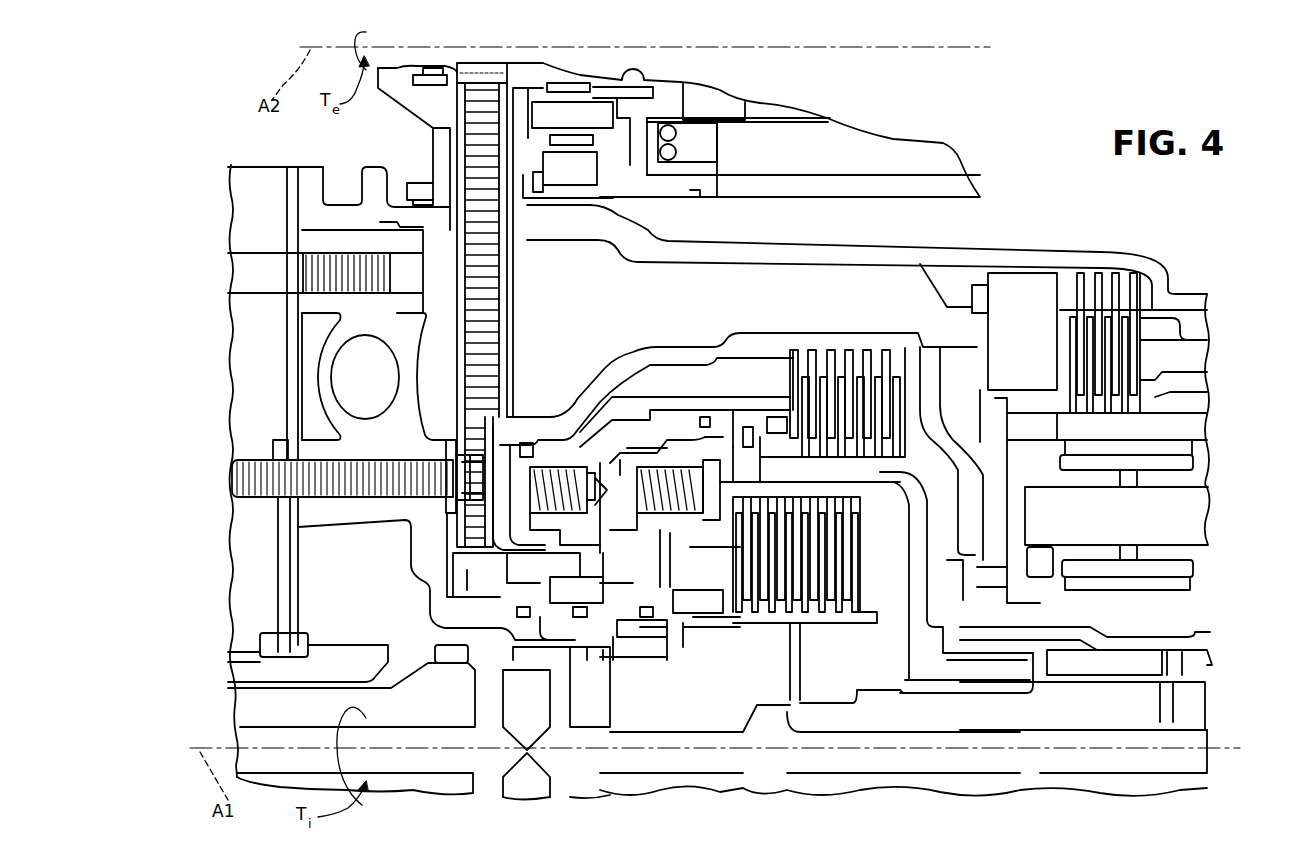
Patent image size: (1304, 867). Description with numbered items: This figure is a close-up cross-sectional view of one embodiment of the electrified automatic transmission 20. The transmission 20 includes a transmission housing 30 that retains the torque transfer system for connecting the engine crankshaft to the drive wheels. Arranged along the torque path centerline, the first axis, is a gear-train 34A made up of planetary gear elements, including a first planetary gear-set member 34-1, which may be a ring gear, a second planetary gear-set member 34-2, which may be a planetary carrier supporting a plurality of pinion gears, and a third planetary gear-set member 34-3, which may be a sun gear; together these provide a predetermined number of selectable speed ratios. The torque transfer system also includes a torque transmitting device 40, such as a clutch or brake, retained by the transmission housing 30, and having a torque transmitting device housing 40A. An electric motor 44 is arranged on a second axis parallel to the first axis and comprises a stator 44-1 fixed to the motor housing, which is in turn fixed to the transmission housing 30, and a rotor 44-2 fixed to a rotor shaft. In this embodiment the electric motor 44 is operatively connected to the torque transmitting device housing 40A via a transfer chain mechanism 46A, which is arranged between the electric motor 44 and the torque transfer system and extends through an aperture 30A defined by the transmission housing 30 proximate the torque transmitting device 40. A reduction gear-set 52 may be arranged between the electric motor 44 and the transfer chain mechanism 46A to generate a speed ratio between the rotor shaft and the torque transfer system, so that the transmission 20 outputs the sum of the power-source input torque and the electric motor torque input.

The transmission 20 is at (222, 322).
The transmission housing 30 is at (718, 222).
The aperture 30A is at (455, 215).
The transfer chain mechanism 46A is at (474, 129).
The reduction gear-set 52 is at (523, 150).
The torque transmitting device 40 is at (682, 385).
The torque transmitting device housing 40A is at (612, 373).
The electric motor 44 is at (881, 114).
The stator 44-1 is at (800, 150).
The rotor 44-2 is at (705, 108).
The first planetary gear-set member 34-1 is at (1180, 435).
The second planetary gear-set member 34-2 is at (1040, 567).
The third planetary gear-set member 34-3 is at (1187, 632).
The gear-train 34A is at (1123, 563).